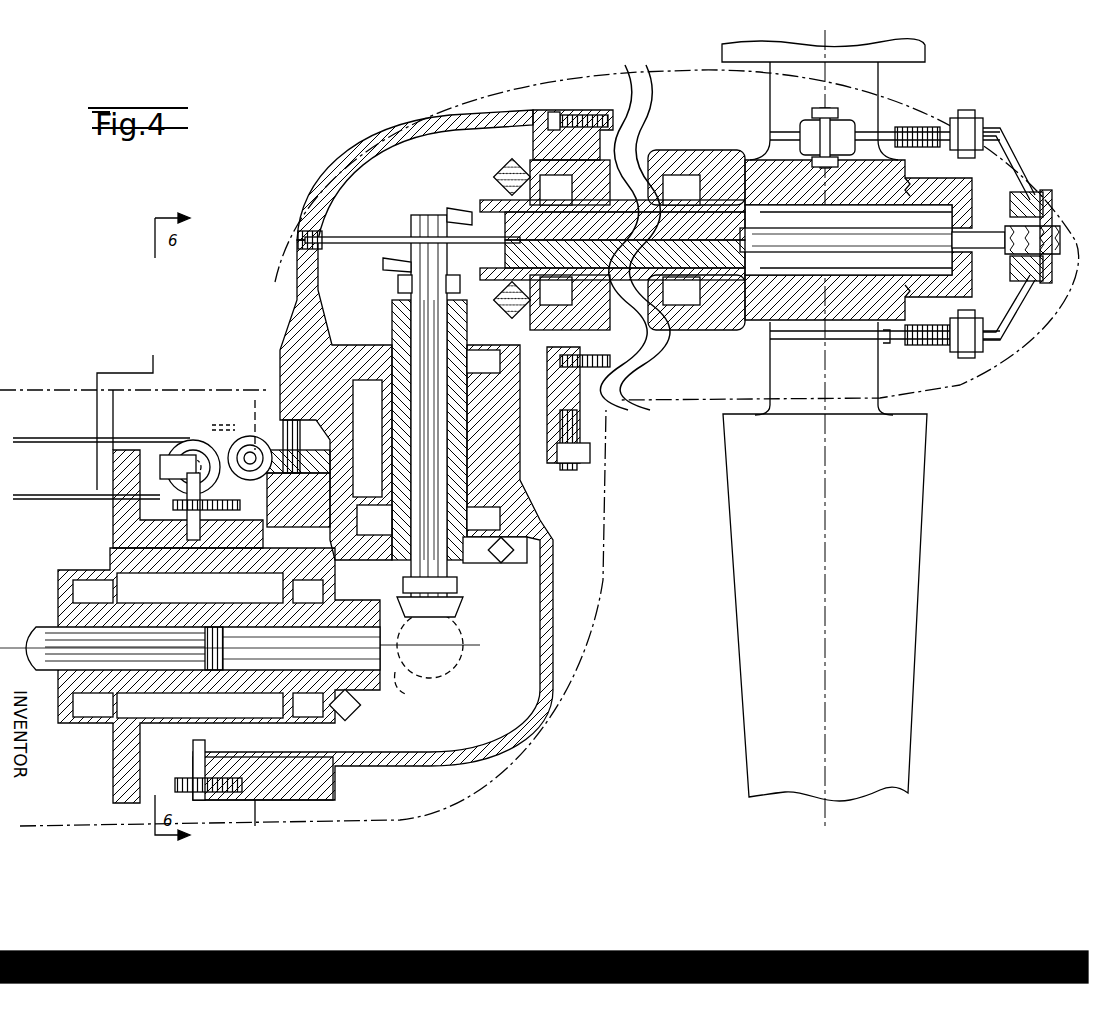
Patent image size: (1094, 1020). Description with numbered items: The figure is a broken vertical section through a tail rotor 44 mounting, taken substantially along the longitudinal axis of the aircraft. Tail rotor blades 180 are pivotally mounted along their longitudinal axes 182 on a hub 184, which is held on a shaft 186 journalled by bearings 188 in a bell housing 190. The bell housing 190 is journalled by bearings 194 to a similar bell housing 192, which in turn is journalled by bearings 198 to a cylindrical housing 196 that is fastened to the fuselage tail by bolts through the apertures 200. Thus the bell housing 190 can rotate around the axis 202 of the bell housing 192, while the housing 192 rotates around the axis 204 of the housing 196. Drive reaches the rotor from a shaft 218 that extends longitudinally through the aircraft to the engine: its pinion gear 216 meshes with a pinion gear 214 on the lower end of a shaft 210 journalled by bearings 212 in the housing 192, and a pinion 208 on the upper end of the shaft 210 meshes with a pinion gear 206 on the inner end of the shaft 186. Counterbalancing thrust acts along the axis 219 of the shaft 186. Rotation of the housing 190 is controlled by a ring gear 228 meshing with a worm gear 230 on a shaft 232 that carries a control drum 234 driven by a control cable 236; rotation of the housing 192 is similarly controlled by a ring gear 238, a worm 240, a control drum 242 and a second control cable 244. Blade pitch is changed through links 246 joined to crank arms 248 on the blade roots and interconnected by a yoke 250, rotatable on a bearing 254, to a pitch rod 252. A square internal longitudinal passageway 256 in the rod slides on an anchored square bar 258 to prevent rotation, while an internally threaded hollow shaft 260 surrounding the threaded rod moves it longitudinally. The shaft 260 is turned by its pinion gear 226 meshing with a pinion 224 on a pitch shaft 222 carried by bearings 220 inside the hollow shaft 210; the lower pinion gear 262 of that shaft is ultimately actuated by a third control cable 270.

The tail rotor 44 is at (938, 386).
The tail rotor blades 180 is at (925, 50).
The longitudinal axes 182 is at (828, 487).
The hub 184 is at (851, 256).
The shaft 186 is at (650, 172).
The bearings 188 is at (555, 305).
The bell housing 190 is at (535, 118).
The bell housing 192 is at (553, 556).
The bearings 194 is at (340, 428).
The cylindrical housing 196 is at (110, 750).
The bearings 198 is at (265, 770).
The apertures 200 is at (118, 512).
The axis 202 is at (428, 212).
The axis 204 is at (470, 648).
The pinion gear 206 is at (505, 185).
The pinion 208 is at (480, 310).
The shaft 210 is at (462, 438).
The bearings 212 is at (484, 375).
The pinion gear 214 is at (483, 562).
The pinion gear 216 is at (350, 700).
The shaft 218 is at (40, 630).
The axis 219 is at (290, 240).
The bearings 220 is at (398, 283).
The pitch shaft 222 is at (410, 330).
The pinion 224 is at (395, 265).
The pinion gear 226 is at (455, 212).
The ring gear 228 is at (566, 470).
The worm gear 230 is at (248, 450).
The shaft 232 is at (272, 492).
The control drum 234 is at (255, 400).
The control cable 236 is at (213, 428).
The ring gear 238 is at (187, 525).
The worm 240 is at (185, 452).
The control drum 242 is at (190, 440).
The control cable 244 is at (45, 447).
The links 246 is at (905, 134).
The crank arms 248 is at (838, 124).
The yoke 250 is at (1000, 152).
The pitch rod 252 is at (897, 243).
The bearing 254 is at (1035, 262).
The internal longitudinal passageway 256 is at (770, 250).
The square bar 258 is at (358, 238).
The hollow shaft 260 is at (490, 213).
The pinion gear 262 is at (460, 612).
The control cable 270 is at (410, 693).